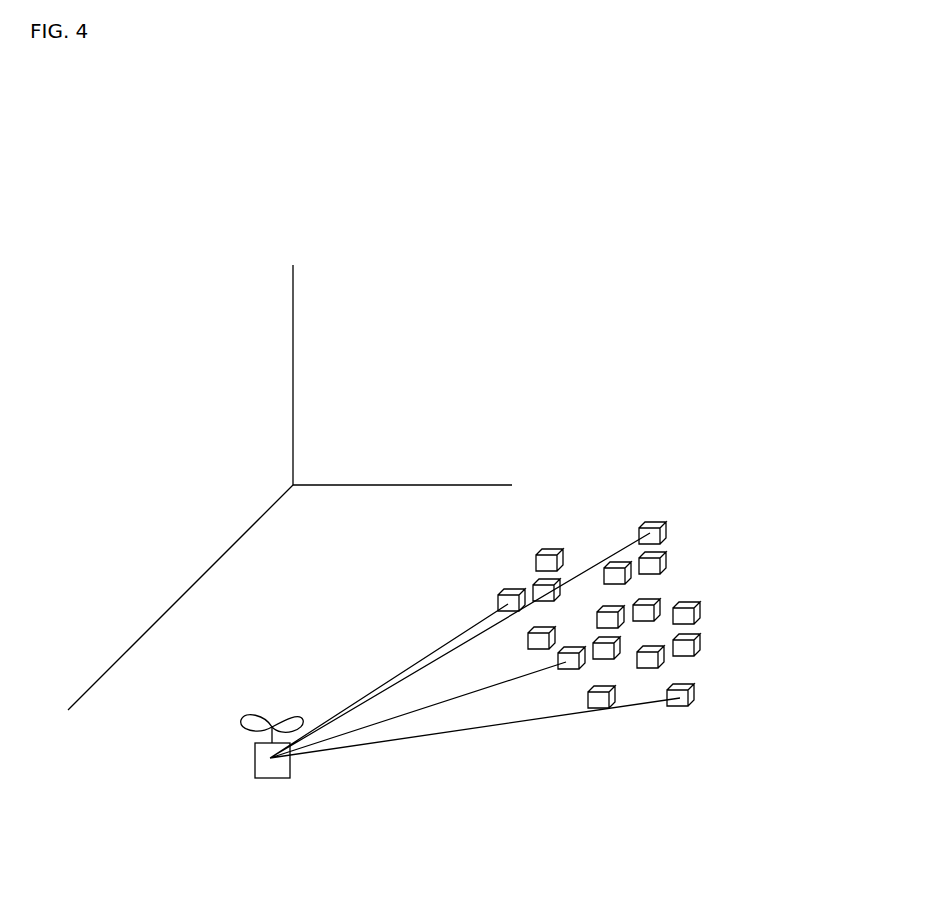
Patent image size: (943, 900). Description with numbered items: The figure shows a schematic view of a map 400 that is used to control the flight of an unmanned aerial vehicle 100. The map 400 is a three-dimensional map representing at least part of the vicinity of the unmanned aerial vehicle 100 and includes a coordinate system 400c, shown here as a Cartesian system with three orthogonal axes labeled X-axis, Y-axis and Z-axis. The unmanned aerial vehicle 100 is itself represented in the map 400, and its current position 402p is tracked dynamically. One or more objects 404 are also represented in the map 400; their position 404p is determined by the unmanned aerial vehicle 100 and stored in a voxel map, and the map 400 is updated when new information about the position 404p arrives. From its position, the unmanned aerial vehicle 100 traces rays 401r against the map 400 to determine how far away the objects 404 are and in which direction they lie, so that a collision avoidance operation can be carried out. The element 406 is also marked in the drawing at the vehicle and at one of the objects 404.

The map 400 is at (722, 163).
The coordinate system 400c is at (337, 432).
The position marker 406 is at (548, 545).
The objects 404 is at (655, 515).
The position of the one or more objects 404p is at (660, 540).
The rays 401r is at (425, 715).
The unmanned aerial vehicle 100 is at (317, 742).
The current position of the unmanned aerial vehicle 402p is at (272, 770).